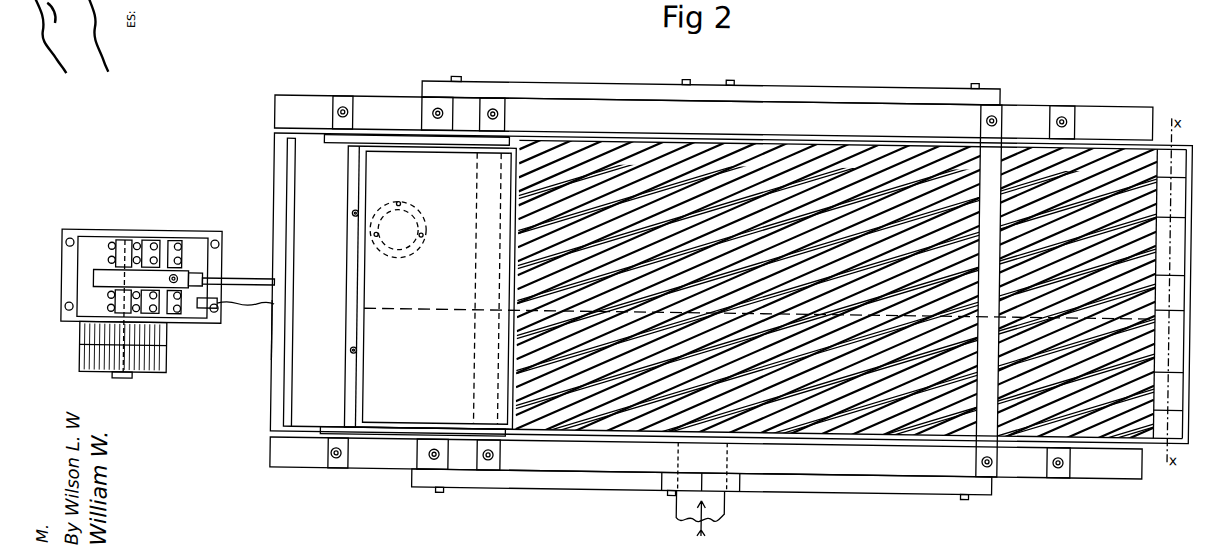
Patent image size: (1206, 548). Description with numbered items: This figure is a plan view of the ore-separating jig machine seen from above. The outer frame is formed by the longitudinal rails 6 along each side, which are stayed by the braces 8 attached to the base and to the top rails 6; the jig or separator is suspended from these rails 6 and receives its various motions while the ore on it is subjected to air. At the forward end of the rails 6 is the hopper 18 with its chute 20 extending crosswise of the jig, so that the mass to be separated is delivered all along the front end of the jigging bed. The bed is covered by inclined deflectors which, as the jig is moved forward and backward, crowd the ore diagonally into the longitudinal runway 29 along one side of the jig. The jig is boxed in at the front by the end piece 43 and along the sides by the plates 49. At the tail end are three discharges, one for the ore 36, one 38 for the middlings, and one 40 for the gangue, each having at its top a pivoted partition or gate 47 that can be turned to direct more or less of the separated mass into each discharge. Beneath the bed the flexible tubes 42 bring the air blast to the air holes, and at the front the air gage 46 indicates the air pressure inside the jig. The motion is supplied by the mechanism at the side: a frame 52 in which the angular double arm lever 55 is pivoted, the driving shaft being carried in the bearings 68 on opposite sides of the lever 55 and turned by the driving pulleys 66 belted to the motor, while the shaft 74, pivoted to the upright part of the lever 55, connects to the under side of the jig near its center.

The longitudinal rails 6 is at (711, 287).
The braces 8 is at (627, 82).
The hopper 18 is at (750, 292).
The chute 20 is at (396, 285).
The longitudinal runway 29 is at (860, 425).
The ore discharge 36 is at (1172, 395).
The middlings discharge 38 is at (1173, 296).
The gangue discharge 40 is at (1175, 197).
The flexible tubes 42 is at (398, 229).
The end piece 43 is at (279, 332).
The air gage 46 is at (224, 300).
The partitions or gates 47 is at (1173, 302).
The plates 49 is at (770, 129).
The frame 52 is at (92, 236).
The angular frame or double arm lever 55 is at (79, 287).
The driving pulleys 66 is at (170, 340).
The bearings 68 is at (130, 264).
The shaft 74 is at (232, 282).